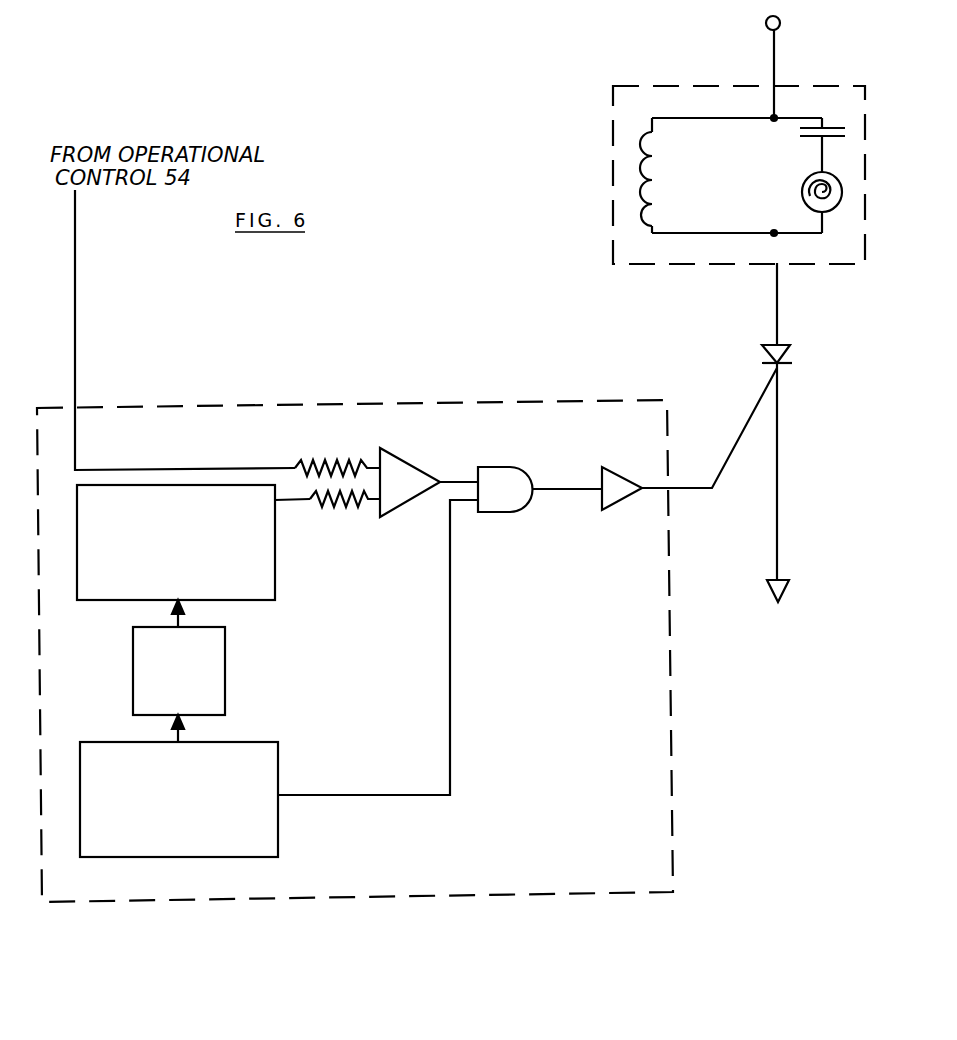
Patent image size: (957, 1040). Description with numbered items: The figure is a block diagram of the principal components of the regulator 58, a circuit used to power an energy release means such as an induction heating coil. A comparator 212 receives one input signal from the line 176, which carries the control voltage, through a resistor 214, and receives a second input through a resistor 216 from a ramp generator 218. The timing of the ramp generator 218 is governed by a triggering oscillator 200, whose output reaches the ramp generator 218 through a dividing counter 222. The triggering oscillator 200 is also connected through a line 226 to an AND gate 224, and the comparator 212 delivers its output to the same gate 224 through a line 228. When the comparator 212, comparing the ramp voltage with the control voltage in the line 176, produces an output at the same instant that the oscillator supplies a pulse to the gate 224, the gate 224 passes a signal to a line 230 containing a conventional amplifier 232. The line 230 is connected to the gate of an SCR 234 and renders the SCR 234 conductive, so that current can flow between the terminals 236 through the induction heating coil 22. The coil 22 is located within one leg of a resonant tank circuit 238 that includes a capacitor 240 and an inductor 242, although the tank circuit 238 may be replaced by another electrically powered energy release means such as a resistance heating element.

The induction heating coil 22 is at (842, 192).
The regulator 58 is at (189, 407).
The line 176 is at (75, 320).
The triggering oscillator 200 is at (278, 835).
The comparator 212 is at (410, 456).
The resistor 214 is at (310, 465).
The resistor 216 is at (318, 512).
The ramp generator 218 is at (275, 560).
The dividing counter 222 is at (133, 680).
The AND gate 224 is at (515, 512).
The line 226 is at (408, 795).
The line 228 is at (468, 478).
The line 230 is at (556, 486).
The amplifier 232 is at (622, 508).
The SCR 234 is at (761, 373).
The terminals 236 is at (781, 20).
The resonant tank circuit 238 is at (613, 228).
The capacitor 240 is at (807, 140).
The inductor 242 is at (665, 178).